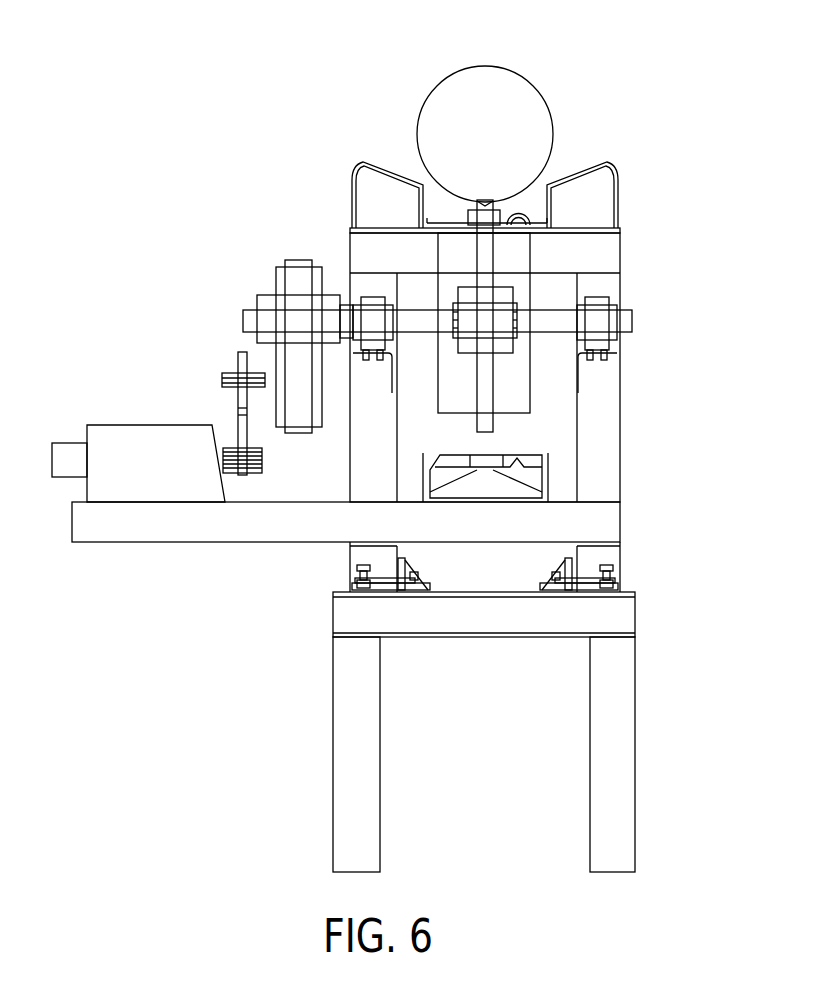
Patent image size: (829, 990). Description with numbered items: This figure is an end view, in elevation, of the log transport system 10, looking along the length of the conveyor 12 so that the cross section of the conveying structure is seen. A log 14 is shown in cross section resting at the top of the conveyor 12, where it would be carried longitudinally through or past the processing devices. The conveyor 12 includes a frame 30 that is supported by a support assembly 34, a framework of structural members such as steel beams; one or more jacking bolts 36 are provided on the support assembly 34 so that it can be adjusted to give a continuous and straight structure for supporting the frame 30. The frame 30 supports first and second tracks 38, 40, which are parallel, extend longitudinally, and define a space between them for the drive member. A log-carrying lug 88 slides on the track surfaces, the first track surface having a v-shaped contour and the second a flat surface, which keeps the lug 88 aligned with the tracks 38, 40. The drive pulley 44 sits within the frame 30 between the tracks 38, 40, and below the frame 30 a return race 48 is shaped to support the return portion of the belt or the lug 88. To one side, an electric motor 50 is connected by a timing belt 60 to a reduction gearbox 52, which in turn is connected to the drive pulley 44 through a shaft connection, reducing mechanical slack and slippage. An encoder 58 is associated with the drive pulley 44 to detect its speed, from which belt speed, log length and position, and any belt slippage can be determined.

The log transport system 10 is at (382, 441).
The conveyor 12 is at (534, 350).
The log 14 is at (423, 112).
The frame 30 is at (547, 228).
The support assembly 34 is at (620, 405).
The jacking bolts 36 is at (355, 570).
The first track 38 is at (547, 187).
The second track 40 is at (447, 217).
The drive pulley 44 is at (495, 395).
The return race 48 is at (548, 470).
The electric motor 50 is at (125, 425).
The reduction gearbox 52 is at (295, 258).
The encoder 58 is at (52, 443).
The timing belt 60 is at (238, 410).
The log-carrying lug 88 is at (517, 200).